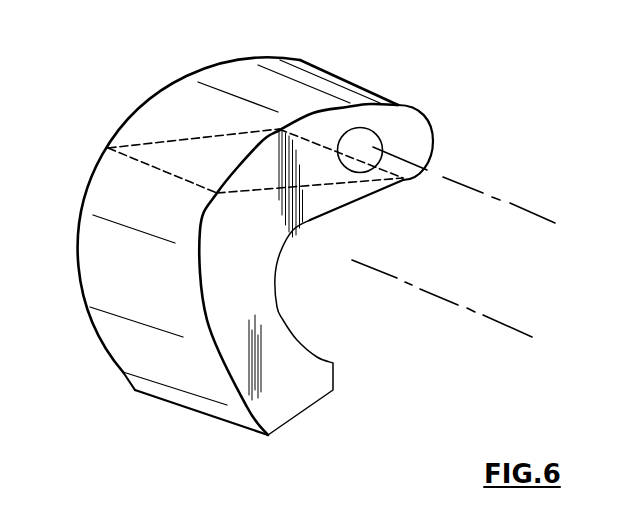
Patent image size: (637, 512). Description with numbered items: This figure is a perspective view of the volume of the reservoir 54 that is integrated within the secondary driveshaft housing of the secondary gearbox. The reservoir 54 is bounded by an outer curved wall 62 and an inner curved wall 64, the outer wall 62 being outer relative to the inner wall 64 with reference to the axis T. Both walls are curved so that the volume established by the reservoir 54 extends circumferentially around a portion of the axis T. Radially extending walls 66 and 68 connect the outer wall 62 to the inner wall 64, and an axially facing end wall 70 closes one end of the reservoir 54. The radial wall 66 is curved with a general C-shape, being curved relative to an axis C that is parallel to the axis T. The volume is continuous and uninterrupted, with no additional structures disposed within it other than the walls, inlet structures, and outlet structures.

The reservoir 54 is at (438, 128).
The outer curved wall 62 is at (107, 205).
The inner curved wall 64 is at (277, 280).
The radial wall 66 is at (387, 100).
The radial wall 68 is at (300, 413).
The axially facing end wall 70 is at (310, 220).
The axis C is at (450, 175).
The axis T is at (452, 305).